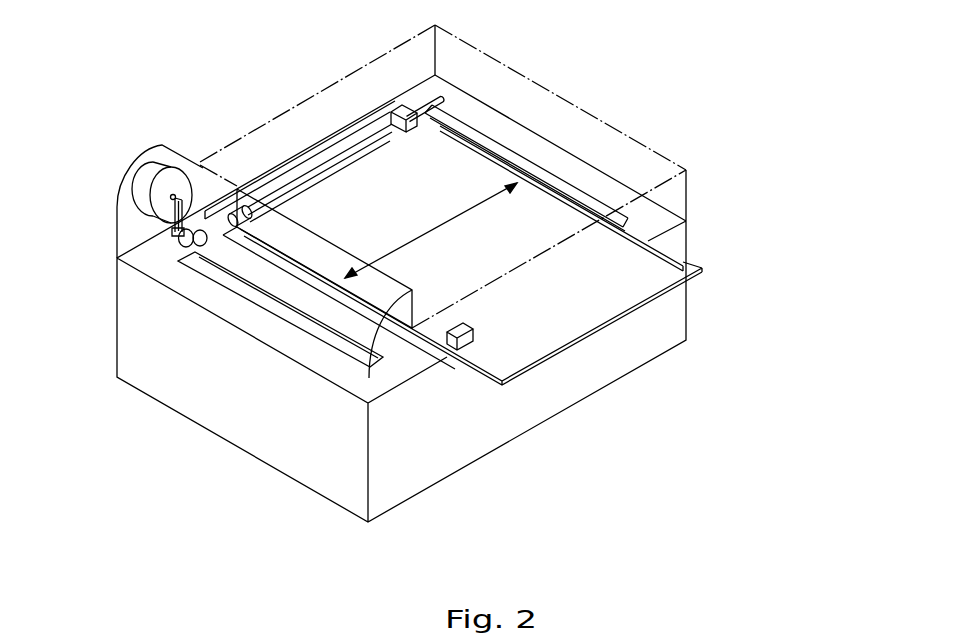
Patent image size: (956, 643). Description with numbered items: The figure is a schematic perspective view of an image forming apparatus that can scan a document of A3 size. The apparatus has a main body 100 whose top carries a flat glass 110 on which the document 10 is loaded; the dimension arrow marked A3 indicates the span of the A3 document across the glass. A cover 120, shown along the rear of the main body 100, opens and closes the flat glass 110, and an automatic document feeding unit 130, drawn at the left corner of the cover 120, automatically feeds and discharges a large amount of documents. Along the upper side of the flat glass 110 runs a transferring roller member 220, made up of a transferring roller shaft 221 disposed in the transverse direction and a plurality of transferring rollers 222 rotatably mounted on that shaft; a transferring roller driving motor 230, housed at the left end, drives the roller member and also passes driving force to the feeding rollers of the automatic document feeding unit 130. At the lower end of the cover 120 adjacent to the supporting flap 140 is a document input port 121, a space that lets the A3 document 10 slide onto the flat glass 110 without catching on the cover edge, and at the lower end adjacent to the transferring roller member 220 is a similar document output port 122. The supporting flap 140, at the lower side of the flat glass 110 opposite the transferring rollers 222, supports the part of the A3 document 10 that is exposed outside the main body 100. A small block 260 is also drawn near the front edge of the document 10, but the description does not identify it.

The document 10 is at (590, 307).
The main body 100 is at (117, 358).
The flat glass 110 is at (491, 138).
The cover 120 is at (627, 133).
The document input port 121 is at (684, 262).
The document output port 122 is at (398, 108).
The automatic document feeding unit 130 is at (117, 208).
The supporting flap 140 is at (487, 377).
The transferring roller member 220 is at (310, 50).
The transferring roller shaft 221 is at (287, 185).
The transferring rollers 222 is at (383, 97).
The transferring roller driving motor 230 is at (164, 162).
The sensor block 260 is at (455, 350).
The A3 document size A3 is at (431, 230).